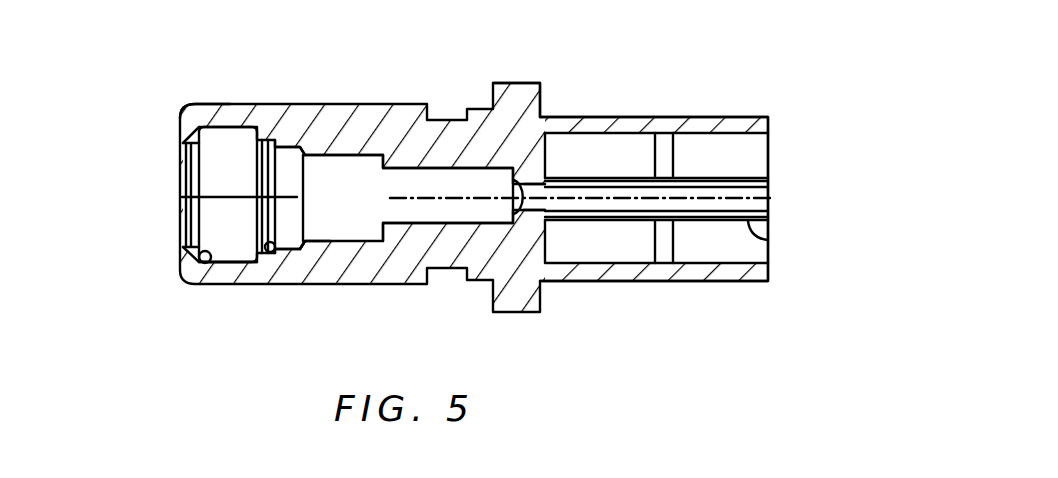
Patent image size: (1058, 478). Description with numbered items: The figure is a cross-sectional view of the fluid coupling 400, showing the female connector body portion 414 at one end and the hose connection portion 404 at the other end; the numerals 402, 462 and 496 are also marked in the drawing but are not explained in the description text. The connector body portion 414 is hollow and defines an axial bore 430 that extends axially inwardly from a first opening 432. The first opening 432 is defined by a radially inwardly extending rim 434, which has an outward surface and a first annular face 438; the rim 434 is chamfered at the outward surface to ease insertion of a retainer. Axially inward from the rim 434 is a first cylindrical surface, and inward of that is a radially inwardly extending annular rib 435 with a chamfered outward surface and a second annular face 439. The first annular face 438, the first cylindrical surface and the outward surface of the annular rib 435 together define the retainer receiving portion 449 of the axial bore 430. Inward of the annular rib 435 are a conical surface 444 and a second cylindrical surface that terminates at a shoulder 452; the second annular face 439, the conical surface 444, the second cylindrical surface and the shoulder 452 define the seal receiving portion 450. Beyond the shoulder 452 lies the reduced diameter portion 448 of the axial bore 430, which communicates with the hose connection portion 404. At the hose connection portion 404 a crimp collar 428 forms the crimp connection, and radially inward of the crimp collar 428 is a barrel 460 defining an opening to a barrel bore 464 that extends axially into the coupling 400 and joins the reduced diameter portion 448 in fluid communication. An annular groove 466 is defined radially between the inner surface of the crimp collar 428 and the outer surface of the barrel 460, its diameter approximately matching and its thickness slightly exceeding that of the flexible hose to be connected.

The coupling 400 is at (568, 42).
The first connector portion 402 is at (226, 70).
The hose connection portion 404 is at (577, 294).
The connector body portion 414 is at (346, 292).
The crimp collar 428 is at (741, 117).
The axial bore 430 is at (213, 173).
The first opening 432 is at (181, 235).
The rim 434 is at (182, 146).
The annular rib 435 is at (298, 222).
The first annular face 438 is at (187, 283).
The second annular face 439 is at (274, 262).
The conical surface 444 is at (320, 125).
The reduced diameter portion 448 is at (435, 187).
The retainer receiving portion 449 is at (232, 243).
The seal receiving portion 450 is at (330, 150).
The shoulder 452 is at (383, 152).
The barrel 460 is at (768, 241).
The pin 462 is at (770, 203).
The barrel bore 464 is at (678, 207).
The annular groove 466 is at (733, 157).
The shoulder 496 is at (318, 268).